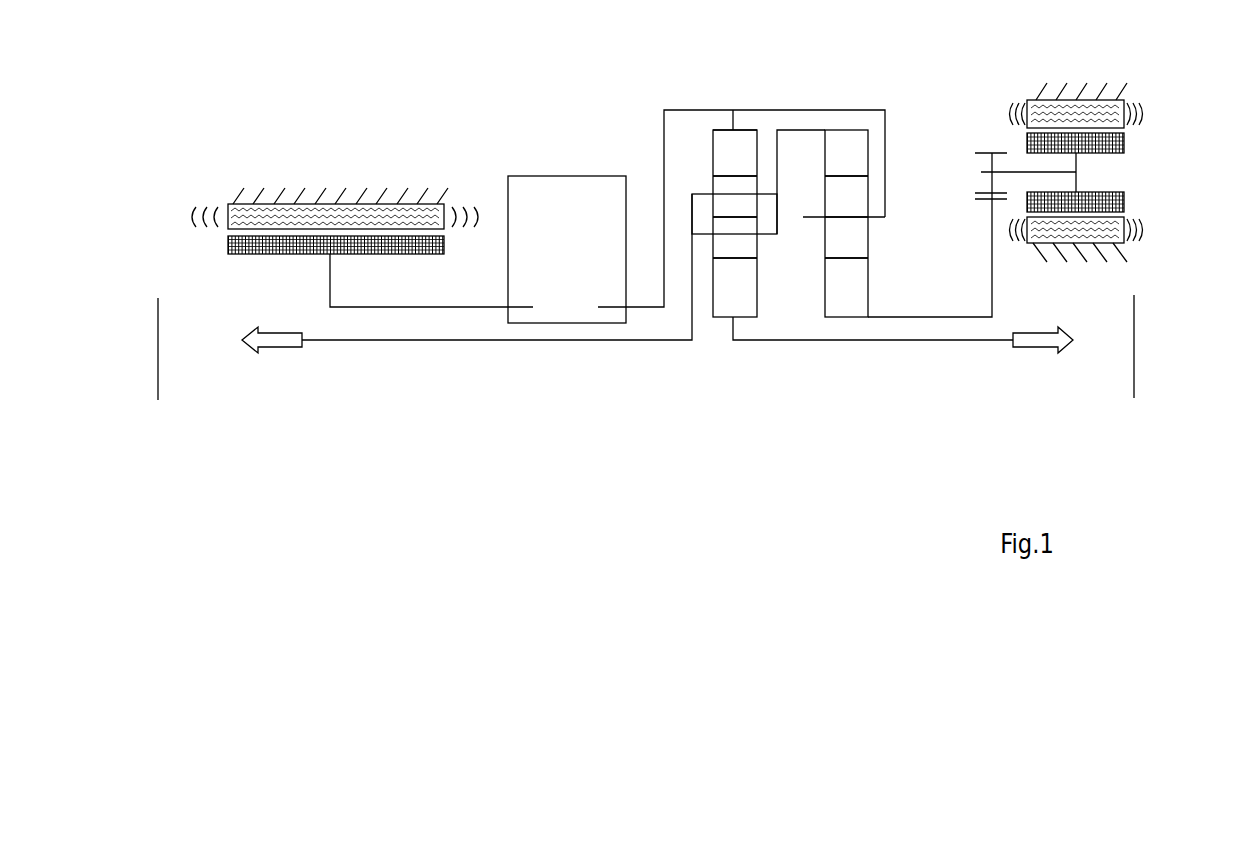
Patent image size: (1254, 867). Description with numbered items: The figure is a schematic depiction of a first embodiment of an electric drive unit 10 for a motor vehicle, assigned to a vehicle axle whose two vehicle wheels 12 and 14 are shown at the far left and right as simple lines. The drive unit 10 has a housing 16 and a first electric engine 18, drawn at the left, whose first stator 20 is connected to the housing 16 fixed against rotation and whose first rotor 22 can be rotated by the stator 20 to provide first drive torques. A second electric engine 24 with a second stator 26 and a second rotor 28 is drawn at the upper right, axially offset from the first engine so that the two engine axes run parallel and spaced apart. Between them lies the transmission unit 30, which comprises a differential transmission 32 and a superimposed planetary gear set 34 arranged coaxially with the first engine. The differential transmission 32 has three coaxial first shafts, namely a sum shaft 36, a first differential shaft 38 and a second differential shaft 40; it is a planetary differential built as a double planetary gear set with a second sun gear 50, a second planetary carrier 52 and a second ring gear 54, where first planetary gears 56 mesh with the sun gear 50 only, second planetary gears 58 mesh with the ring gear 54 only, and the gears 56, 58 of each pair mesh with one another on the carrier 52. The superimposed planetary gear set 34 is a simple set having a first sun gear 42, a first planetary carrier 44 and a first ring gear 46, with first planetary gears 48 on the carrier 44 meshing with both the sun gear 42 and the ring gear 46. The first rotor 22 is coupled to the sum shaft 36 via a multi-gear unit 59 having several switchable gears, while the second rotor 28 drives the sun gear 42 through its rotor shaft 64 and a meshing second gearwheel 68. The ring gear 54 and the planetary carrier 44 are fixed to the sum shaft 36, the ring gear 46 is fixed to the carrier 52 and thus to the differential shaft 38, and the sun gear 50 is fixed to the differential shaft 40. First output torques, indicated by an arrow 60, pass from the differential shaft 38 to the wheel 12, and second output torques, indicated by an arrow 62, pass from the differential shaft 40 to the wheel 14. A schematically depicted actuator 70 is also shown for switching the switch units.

The electric drive unit 10 is at (1116, 85).
The first vehicle wheel 12 is at (158, 378).
The second vehicle wheel 14 is at (1134, 322).
The housing 16 is at (373, 200).
The first electric engine 18 is at (272, 215).
The first stator 20 is at (237, 200).
The first rotor 22 is at (300, 257).
The second electric engine 24 is at (1068, 100).
The second stator 26 is at (1115, 115).
The second rotor 28 is at (1110, 200).
The transmission unit 30 is at (898, 125).
The differential transmission 32 is at (745, 130).
The superimposed planetary gear set 34 is at (858, 130).
The sum shaft 36 is at (733, 110).
The first differential shaft 38 is at (492, 340).
The second differential shaft 40 is at (915, 340).
The first sun gear 42 is at (843, 305).
The first planetary carrier 44 is at (878, 220).
The first ring gear 46 is at (845, 137).
The first planetary gears 48 is at (858, 188).
The second sun gear 50 is at (722, 308).
The second planetary carrier 52 is at (692, 194).
The second ring gear 54 is at (722, 135).
The first planetary gears of the differential 56 is at (745, 240).
The second planetary gears of the differential 58 is at (720, 188).
The multi-gear unit 59 is at (556, 185).
The arrow 60 is at (278, 343).
The arrow 62 is at (1045, 340).
The rotor shaft 64 is at (1060, 170).
The second gearwheel 68 is at (992, 262).
The actuator 70 is at (981, 153).